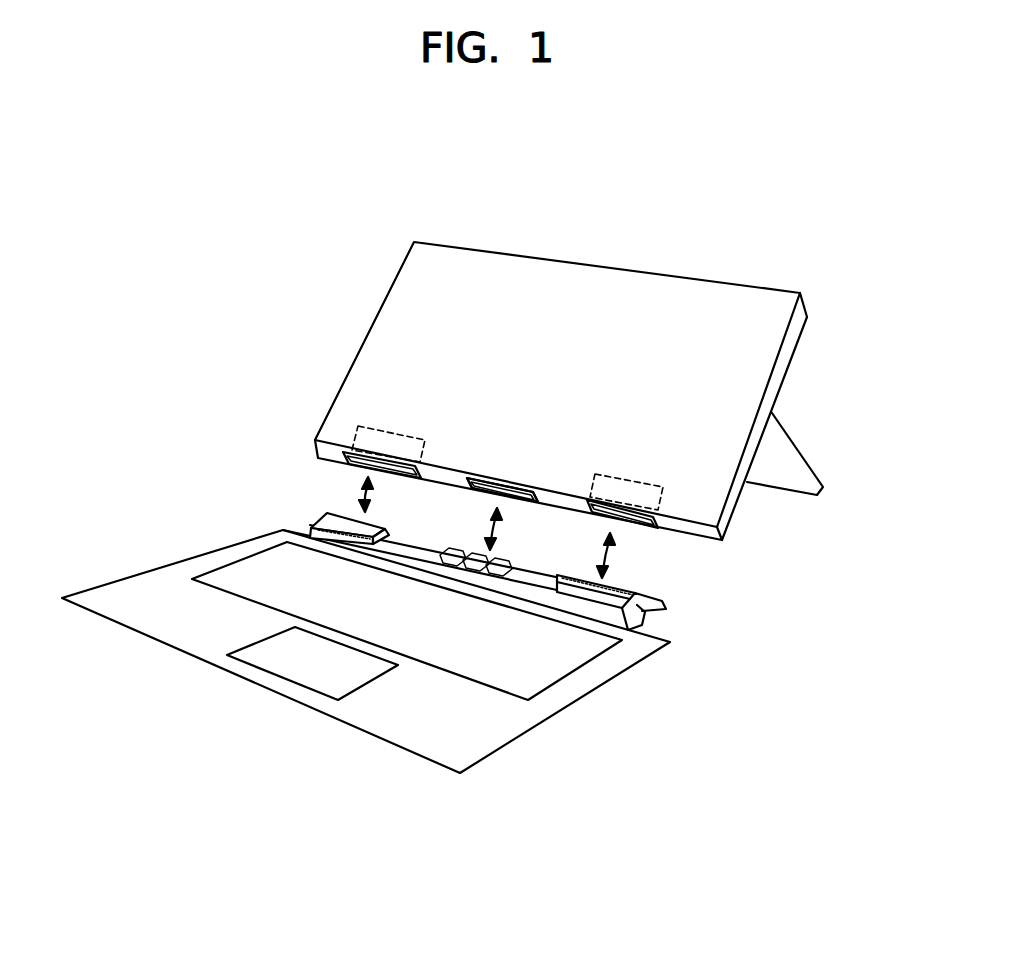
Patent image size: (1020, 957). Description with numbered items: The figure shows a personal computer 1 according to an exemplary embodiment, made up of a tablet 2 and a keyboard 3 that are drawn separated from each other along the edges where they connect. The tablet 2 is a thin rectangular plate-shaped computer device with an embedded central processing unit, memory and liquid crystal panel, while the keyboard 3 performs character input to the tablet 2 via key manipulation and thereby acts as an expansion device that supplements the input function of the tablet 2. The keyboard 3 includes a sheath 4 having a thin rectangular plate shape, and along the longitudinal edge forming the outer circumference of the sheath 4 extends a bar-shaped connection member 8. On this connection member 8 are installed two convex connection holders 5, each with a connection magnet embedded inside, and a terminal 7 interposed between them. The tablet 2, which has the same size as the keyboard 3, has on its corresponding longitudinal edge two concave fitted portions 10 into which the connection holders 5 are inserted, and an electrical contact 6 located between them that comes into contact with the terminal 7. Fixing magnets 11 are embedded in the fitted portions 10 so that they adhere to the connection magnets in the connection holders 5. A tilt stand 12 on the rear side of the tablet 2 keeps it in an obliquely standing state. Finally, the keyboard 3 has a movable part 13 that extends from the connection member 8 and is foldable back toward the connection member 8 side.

The personal computer 1 is at (130, 322).
The tablet 2 is at (578, 310).
The keyboard 3 is at (149, 548).
The sheath 4 is at (393, 725).
The connection holder 5 is at (318, 522).
The electrical contact 6 is at (489, 478).
The terminal 7 is at (487, 582).
The connection member 8 is at (640, 620).
The fitted portion 10 is at (340, 453).
The fixing magnet 11 is at (358, 428).
The tilt stand 12 is at (780, 470).
The movable part 13 is at (664, 604).